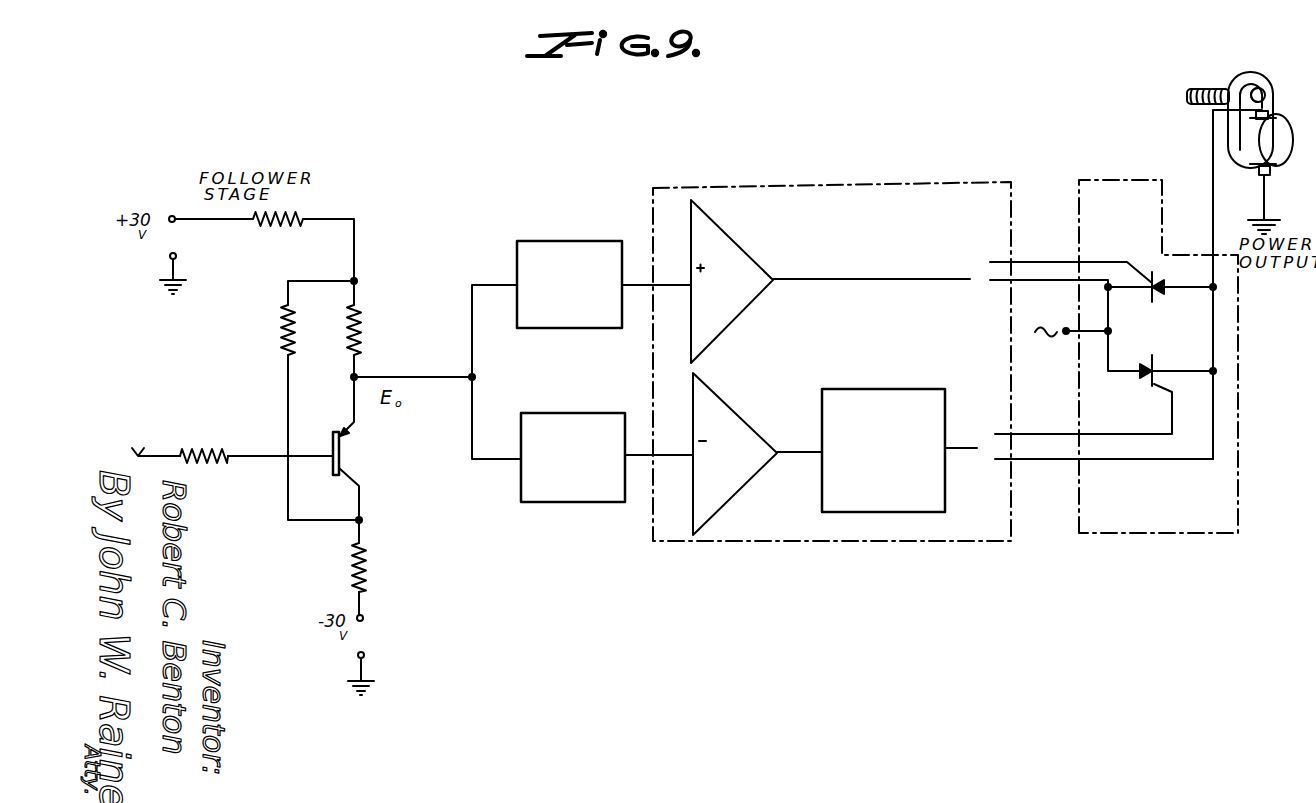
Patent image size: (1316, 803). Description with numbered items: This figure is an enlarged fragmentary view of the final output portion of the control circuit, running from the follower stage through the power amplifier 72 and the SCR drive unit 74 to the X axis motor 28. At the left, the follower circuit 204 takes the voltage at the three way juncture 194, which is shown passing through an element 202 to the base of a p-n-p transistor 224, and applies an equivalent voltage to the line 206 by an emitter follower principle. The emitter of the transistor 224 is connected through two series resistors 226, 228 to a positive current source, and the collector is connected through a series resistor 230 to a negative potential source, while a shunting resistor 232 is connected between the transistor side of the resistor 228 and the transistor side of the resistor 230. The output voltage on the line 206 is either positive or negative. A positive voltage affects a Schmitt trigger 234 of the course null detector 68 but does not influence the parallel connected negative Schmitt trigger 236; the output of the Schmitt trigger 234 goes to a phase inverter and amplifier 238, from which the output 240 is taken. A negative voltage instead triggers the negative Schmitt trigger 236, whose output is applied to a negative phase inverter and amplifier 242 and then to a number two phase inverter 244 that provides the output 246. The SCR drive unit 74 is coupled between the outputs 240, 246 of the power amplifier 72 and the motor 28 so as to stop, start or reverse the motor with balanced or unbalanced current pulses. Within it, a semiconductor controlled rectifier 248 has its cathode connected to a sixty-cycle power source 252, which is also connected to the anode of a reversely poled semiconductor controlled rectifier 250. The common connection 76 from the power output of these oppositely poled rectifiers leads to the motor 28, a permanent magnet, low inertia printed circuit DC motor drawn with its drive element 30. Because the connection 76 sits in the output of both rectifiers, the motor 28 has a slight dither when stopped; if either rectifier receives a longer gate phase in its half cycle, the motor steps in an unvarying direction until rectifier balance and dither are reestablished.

The X axis motor 28 is at (1278, 125).
The worm drive screw 30 is at (1207, 66).
The course null detector 68 is at (524, 232).
The power amplifier 72 is at (862, 183).
The SCR drive unit 74 is at (1077, 194).
The connection 76 is at (1213, 215).
The three way juncture 194 is at (148, 438).
The input resistor 202 is at (215, 452).
The follower circuit 204 is at (383, 460).
The line 206 is at (438, 358).
The p-n-p transistor 224 is at (339, 458).
The series resistor 226 is at (361, 318).
The series resistor 228 is at (303, 219).
The series resistor 230 is at (366, 570).
The shunting resistor 232 is at (281, 328).
The Schmitt trigger 234 is at (585, 222).
The negative Schmitt trigger 236 is at (583, 503).
The phase inverter and amplifier 238 is at (724, 242).
The output 240 is at (928, 250).
The negative phase inverter and amplifier 242 is at (710, 507).
The No. 2 phase inverter 244 is at (915, 512).
The output 246 is at (962, 447).
The semiconductor controlled rectifier 248 is at (1157, 292).
The reversely poled semiconductor controlled rectifier 250 is at (1160, 377).
The sixty-cycle power source 252 is at (1066, 335).